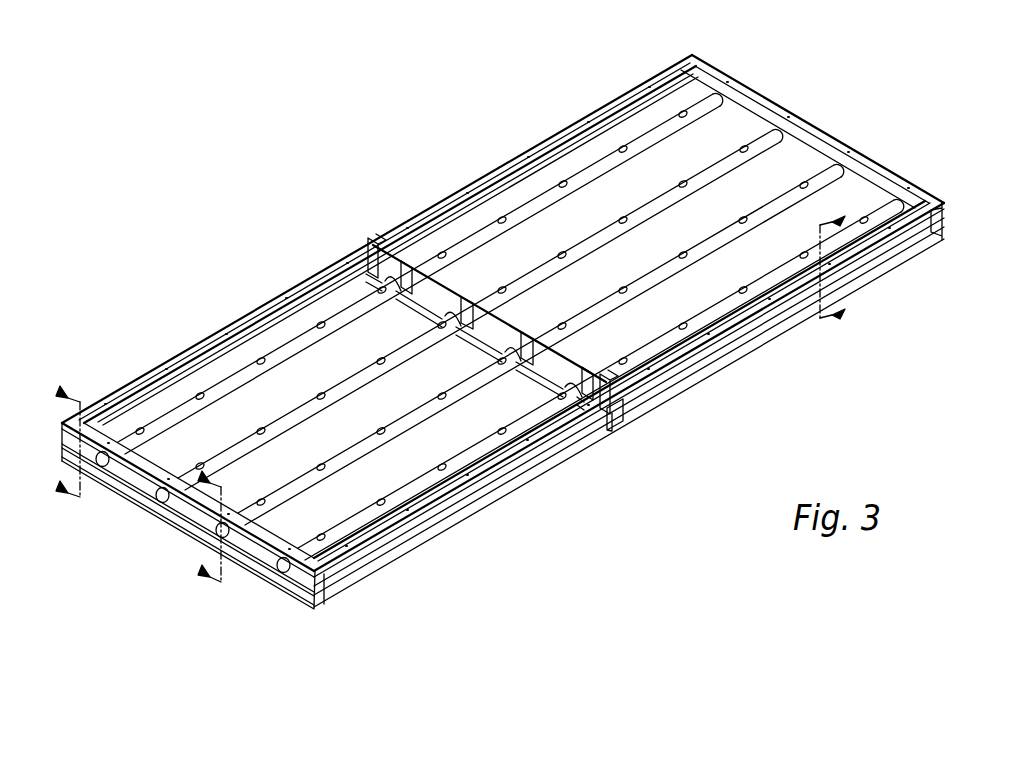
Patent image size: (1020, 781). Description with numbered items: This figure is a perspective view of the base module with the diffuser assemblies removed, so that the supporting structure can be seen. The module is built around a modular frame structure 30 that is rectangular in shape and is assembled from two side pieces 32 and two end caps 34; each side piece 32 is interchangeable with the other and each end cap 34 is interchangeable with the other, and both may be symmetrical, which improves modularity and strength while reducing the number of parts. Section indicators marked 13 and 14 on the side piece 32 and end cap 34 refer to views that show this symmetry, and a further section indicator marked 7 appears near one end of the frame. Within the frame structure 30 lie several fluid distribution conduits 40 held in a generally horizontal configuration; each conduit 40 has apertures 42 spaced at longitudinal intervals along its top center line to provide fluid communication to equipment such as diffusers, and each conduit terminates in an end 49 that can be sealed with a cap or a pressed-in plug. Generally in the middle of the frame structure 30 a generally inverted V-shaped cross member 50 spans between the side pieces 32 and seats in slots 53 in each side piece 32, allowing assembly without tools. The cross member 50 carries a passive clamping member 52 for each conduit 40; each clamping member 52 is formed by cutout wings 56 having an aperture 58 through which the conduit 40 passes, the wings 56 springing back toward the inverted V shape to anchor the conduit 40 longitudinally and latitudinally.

The modular frame structure 30 is at (745, 357).
The side piece 32 is at (300, 283).
The end cap 34 is at (762, 97).
The fluid distribution conduit 40 is at (425, 488).
The aperture 42 is at (262, 428).
The end of the fluid distribution conduit 49 is at (256, 575).
The cross member 50 is at (548, 378).
The clamping member 52 is at (470, 300).
The slot 53 is at (375, 248).
The cutout wing 56 is at (605, 372).
The aperture of the wing 58 is at (493, 347).
The section line 7- 7 is at (213, 534).
The section line 13- 13 is at (70, 445).
The section line 14- 14 is at (824, 277).